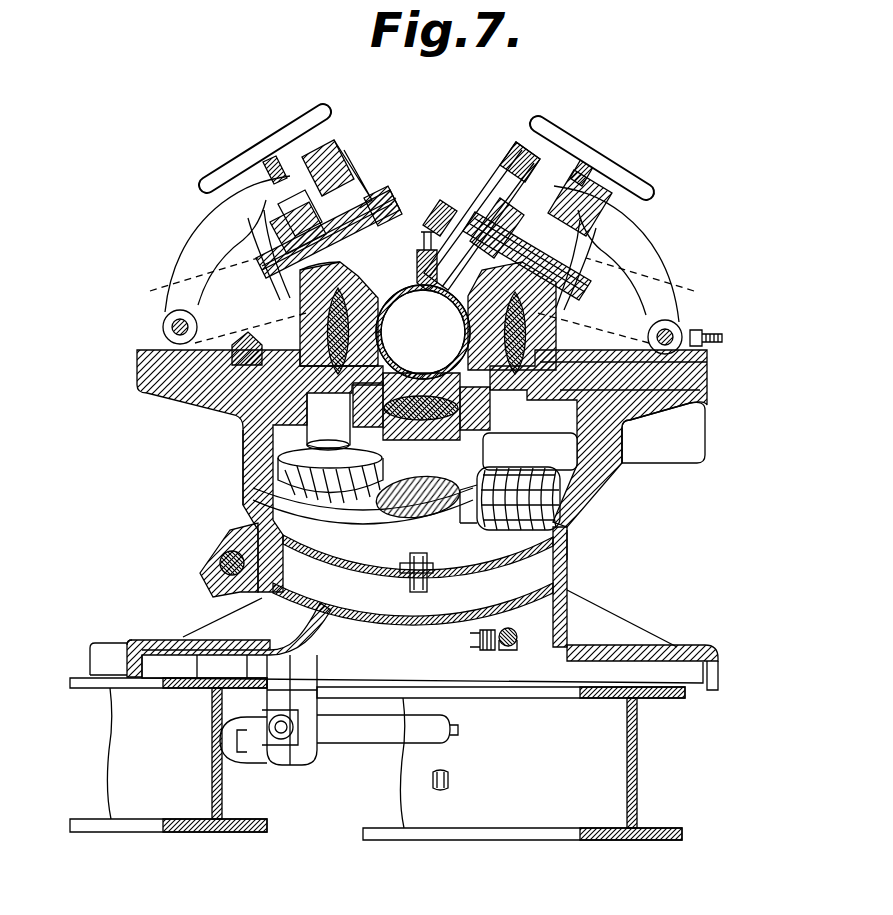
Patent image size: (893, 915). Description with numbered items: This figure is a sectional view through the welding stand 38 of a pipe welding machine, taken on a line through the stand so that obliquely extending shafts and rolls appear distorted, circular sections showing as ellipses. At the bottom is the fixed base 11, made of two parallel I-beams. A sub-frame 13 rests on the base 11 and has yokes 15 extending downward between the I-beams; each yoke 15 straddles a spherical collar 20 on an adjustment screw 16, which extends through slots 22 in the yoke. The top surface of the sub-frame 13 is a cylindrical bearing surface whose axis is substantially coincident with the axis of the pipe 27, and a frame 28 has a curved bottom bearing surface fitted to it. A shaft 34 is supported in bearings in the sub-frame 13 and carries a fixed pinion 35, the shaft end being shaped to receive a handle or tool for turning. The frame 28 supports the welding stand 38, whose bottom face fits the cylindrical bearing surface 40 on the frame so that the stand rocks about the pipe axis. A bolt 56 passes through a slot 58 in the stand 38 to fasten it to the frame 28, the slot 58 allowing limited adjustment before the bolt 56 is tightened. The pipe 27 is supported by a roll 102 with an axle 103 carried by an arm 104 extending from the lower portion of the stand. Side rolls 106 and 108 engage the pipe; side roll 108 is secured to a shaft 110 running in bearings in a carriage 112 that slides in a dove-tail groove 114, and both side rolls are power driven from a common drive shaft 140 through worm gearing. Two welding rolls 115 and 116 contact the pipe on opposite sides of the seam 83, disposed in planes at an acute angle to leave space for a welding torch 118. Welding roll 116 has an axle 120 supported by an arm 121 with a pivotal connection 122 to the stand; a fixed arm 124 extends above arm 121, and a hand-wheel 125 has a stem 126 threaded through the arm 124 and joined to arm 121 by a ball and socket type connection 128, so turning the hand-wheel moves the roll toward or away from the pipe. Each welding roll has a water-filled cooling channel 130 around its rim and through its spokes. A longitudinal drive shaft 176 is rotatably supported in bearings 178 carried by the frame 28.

The fixed base 11 is at (649, 751).
The sub-frame 13 is at (690, 645).
The yoke 15 is at (320, 765).
The adjustment screw 16 is at (369, 738).
The spherical collar 20 is at (278, 742).
The slot 22 is at (300, 712).
The pipe 27 is at (430, 366).
The frame 28 is at (572, 560).
The shaft 34 is at (512, 648).
The pinion 35 is at (478, 647).
The welding stand 38 is at (602, 533).
The cylindrical bearing surface 40 is at (352, 578).
The bolt 56 is at (406, 592).
The slot 58 is at (452, 582).
The seam 83 is at (436, 300).
The roll 102 is at (393, 453).
The axle 103 is at (432, 478).
The arm 104 is at (493, 430).
The side roll 106 is at (476, 328).
The side roll 108 is at (318, 332).
The shaft 110 is at (378, 330).
The carriage 112 is at (245, 418).
The dove-tail groove 114 is at (236, 340).
The welding roll 115 is at (506, 181).
The welding roll 116 is at (346, 172).
The welding torch 118 is at (441, 232).
The axle 120 is at (356, 194).
The arm 121 is at (569, 243).
The pivotal connection 122 is at (168, 325).
The fixed arm 124 is at (194, 243).
The hand-wheel 125 is at (248, 153).
The stem 126 is at (270, 158).
The ball and socket type connection 128 is at (293, 222).
The channel 130 is at (420, 254).
The drive shaft 140 is at (460, 518).
The longitudinal drive shaft 176 is at (229, 598).
The bearings 178 is at (244, 530).